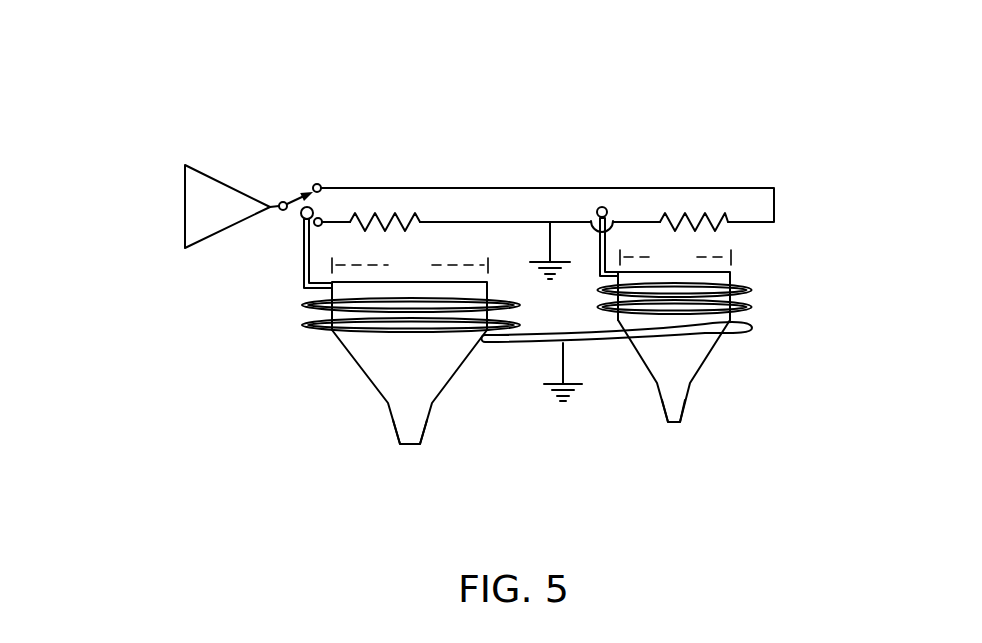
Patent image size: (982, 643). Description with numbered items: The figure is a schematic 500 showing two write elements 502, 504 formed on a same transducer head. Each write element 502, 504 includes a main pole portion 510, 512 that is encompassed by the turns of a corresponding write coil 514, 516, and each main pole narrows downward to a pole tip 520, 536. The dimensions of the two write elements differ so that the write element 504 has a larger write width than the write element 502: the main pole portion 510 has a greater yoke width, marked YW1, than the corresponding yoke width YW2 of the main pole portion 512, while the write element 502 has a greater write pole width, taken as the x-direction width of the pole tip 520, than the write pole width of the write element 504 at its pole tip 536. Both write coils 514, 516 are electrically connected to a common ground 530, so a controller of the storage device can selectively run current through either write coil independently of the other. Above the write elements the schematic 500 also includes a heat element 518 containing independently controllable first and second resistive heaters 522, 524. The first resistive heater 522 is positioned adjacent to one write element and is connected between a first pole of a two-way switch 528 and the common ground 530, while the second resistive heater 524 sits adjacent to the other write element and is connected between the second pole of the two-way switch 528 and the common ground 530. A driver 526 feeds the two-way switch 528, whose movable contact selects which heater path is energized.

The schematic 500 is at (156, 55).
The driver (inverter) 526 is at (185, 207).
The two-way switch 528 is at (302, 196).
The heat element 518 is at (560, 180).
The first resistive heater 522 is at (382, 215).
The second resistive heater 524 is at (663, 217).
The common ground 530 is at (549, 236).
The write element 502 is at (288, 266).
The write element 504 is at (750, 263).
The write coil 514 is at (302, 307).
The write coil 516 is at (748, 309).
The main pole portion 510 is at (360, 375).
The main pole portion 512 is at (716, 348).
The pole tip 520 is at (413, 446).
The pole tip 536 is at (672, 424).